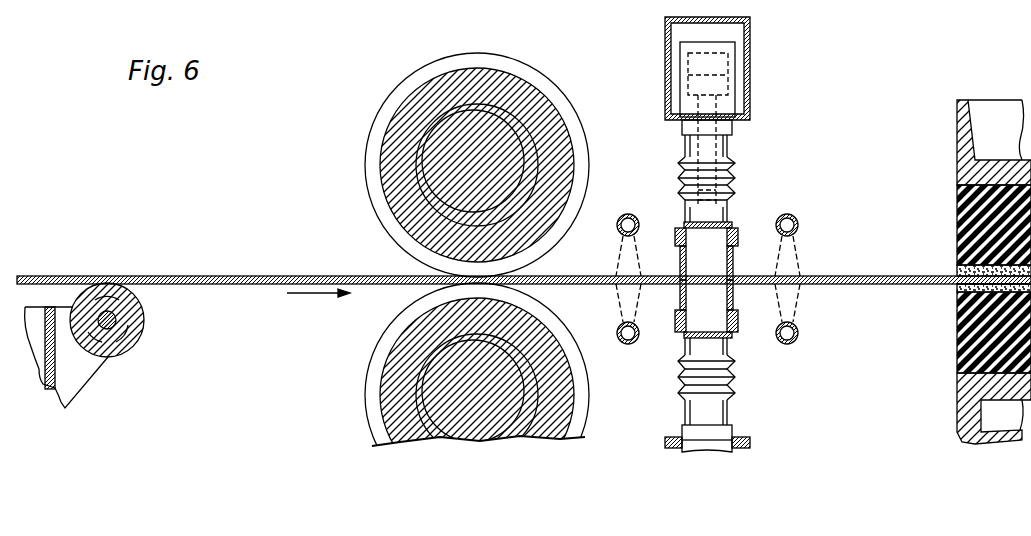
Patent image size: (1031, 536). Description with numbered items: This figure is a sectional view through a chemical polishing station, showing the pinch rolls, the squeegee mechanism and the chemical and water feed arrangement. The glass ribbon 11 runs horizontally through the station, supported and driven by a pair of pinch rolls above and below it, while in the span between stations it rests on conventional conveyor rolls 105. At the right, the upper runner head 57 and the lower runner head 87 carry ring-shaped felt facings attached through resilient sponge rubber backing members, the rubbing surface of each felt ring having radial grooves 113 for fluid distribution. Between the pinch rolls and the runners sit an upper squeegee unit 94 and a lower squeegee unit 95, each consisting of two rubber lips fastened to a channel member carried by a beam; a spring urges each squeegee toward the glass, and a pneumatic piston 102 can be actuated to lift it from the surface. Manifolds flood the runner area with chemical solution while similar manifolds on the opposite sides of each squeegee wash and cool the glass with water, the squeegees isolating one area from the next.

The glass ribbon 11 is at (245, 276).
The upper runner head 57 is at (956, 165).
The lower runner head 87 is at (962, 408).
The upper squeegee unit 94 is at (707, 243).
The lower squeegee unit 95 is at (707, 319).
The pneumatic piston 102 is at (736, 64).
The conveyor rolls 105 is at (144, 325).
The radial grooves 113 is at (957, 284).